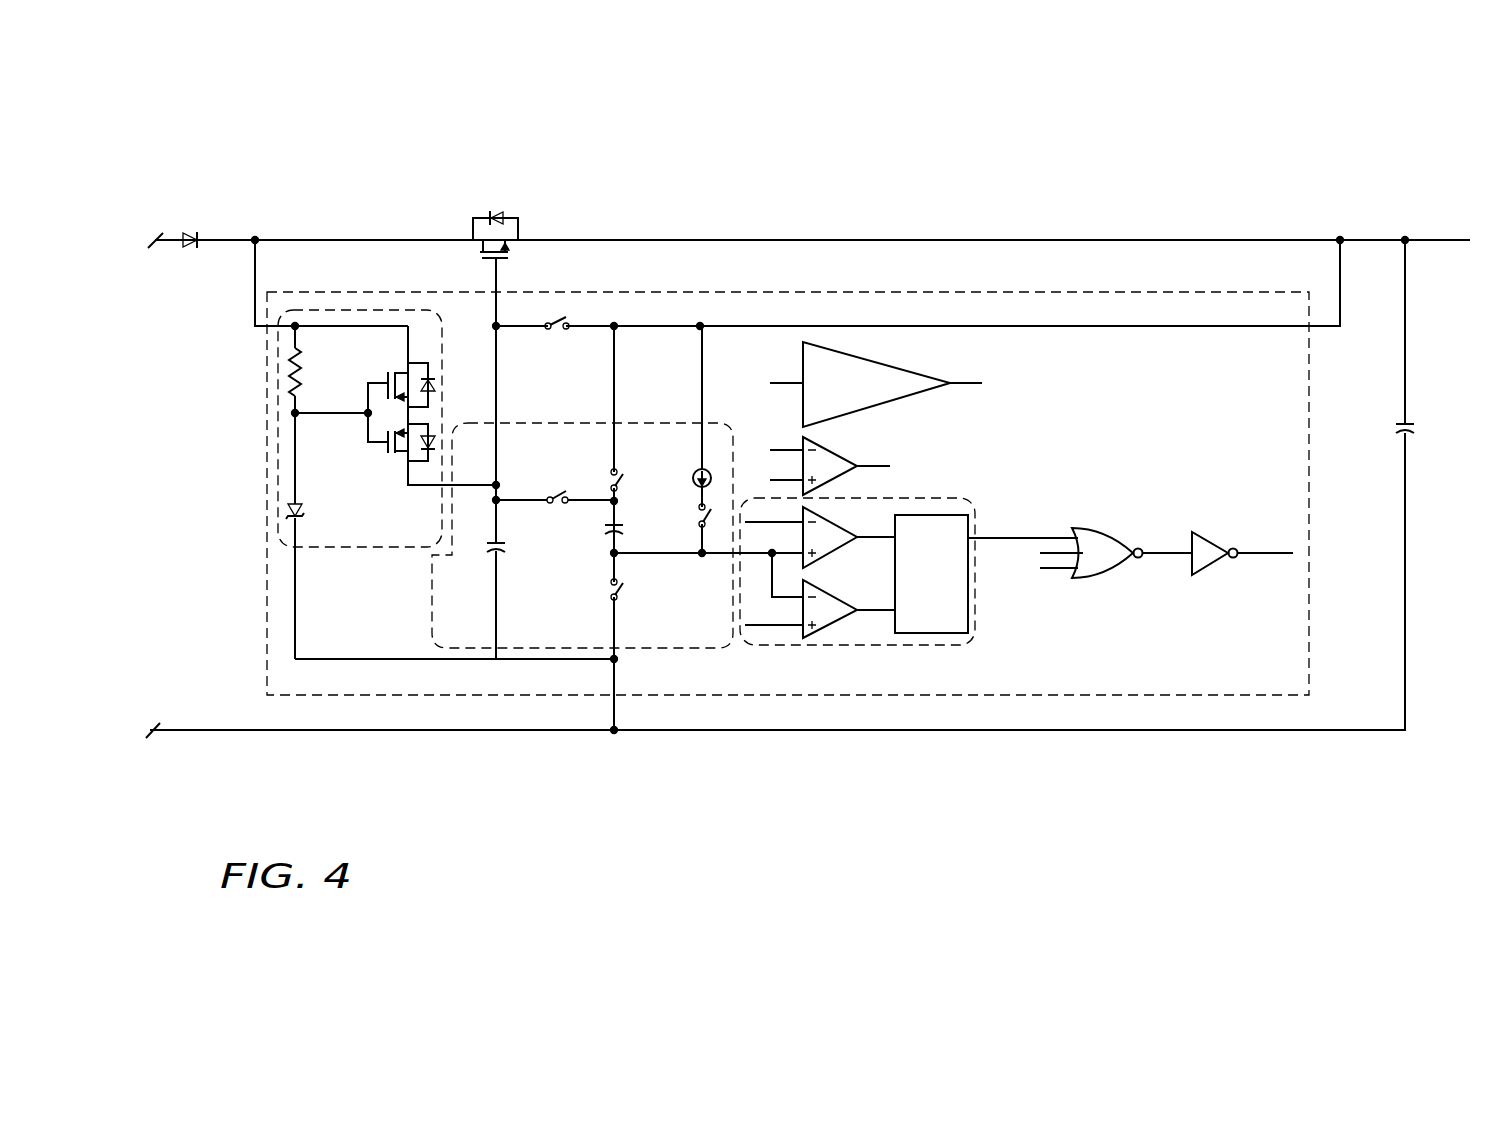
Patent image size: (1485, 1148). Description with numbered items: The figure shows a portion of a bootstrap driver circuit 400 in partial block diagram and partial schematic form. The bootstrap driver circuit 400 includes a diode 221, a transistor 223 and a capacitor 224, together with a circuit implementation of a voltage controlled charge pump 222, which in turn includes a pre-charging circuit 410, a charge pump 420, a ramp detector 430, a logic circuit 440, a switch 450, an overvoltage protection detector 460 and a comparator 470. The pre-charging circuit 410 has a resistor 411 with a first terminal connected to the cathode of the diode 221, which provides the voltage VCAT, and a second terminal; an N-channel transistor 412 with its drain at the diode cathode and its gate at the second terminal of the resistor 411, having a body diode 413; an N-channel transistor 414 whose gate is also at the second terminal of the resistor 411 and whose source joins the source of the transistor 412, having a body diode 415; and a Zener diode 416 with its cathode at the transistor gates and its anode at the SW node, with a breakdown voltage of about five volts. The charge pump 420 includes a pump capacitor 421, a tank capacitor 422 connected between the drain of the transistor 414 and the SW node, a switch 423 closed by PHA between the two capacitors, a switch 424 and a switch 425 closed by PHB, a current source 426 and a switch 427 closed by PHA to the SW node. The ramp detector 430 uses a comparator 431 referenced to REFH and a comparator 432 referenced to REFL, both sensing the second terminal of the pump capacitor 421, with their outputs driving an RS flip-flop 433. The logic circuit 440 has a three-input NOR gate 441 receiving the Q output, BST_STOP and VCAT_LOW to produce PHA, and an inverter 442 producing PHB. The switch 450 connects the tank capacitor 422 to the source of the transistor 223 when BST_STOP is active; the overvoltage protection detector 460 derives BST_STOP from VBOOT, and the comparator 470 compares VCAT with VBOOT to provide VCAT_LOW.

The bootstrap driver circuit 400 is at (192, 149).
The diode 221 is at (193, 246).
The voltage controlled charge pump 222 is at (690, 292).
The transistor 223 is at (483, 249).
The capacitor 224 is at (1407, 420).
The pre-charging circuit 410 is at (366, 548).
The resistor 411 is at (303, 380).
The transistor 412 is at (382, 372).
The body diode 413 is at (436, 384).
The transistor 414 is at (385, 448).
The body diode 415 is at (436, 428).
The Zener diode 416 is at (301, 510).
The charge pump 420 is at (568, 423).
The pump capacitor 421 is at (612, 532).
The tank capacitor 422 is at (500, 552).
The switch 423 is at (558, 494).
The switch 424 is at (619, 477).
The switch 425 is at (621, 588).
The current source 426 is at (699, 468).
The switch 427 is at (710, 528).
The ramp detector 430 is at (980, 505).
The comparator 431 is at (826, 528).
The comparator 432 is at (826, 600).
The flip-flop 433 is at (893, 626).
The logic circuit 440 is at (1058, 602).
The NOR gate 441 is at (1100, 527).
The inverter 442 is at (1205, 531).
The switch 450 is at (556, 334).
The overvoltage protection detector 460 is at (880, 360).
The comparator 470 is at (823, 448).